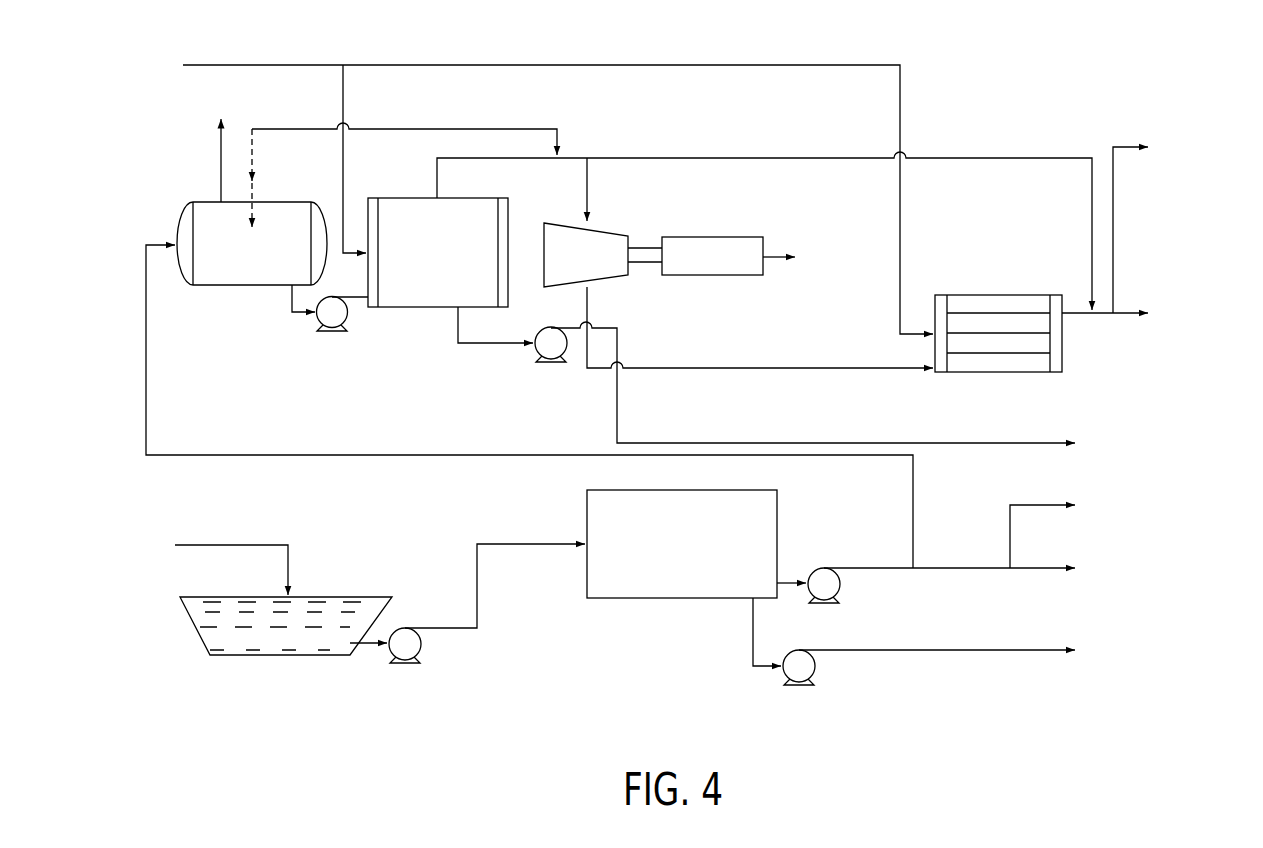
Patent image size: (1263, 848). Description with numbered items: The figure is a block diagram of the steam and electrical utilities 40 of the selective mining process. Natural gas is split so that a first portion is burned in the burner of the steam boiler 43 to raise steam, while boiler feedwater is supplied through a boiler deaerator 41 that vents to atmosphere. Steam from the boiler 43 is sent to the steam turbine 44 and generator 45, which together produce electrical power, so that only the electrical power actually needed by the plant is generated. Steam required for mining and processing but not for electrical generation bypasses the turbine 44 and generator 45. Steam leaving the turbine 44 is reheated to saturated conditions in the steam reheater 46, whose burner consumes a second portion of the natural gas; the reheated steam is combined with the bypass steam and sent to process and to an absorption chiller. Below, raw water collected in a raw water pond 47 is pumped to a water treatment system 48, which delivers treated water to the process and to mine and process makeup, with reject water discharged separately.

The steam generation and water treatment system 40 is at (989, 53).
The boiler deaerator 41 is at (252, 285).
The steam boiler 43 is at (425, 307).
The steam turbine 44 is at (600, 287).
The generator 45 is at (712, 275).
The steam reheater 46 is at (997, 372).
The raw water pond 47 is at (190, 617).
The water treatment system 48 is at (680, 598).